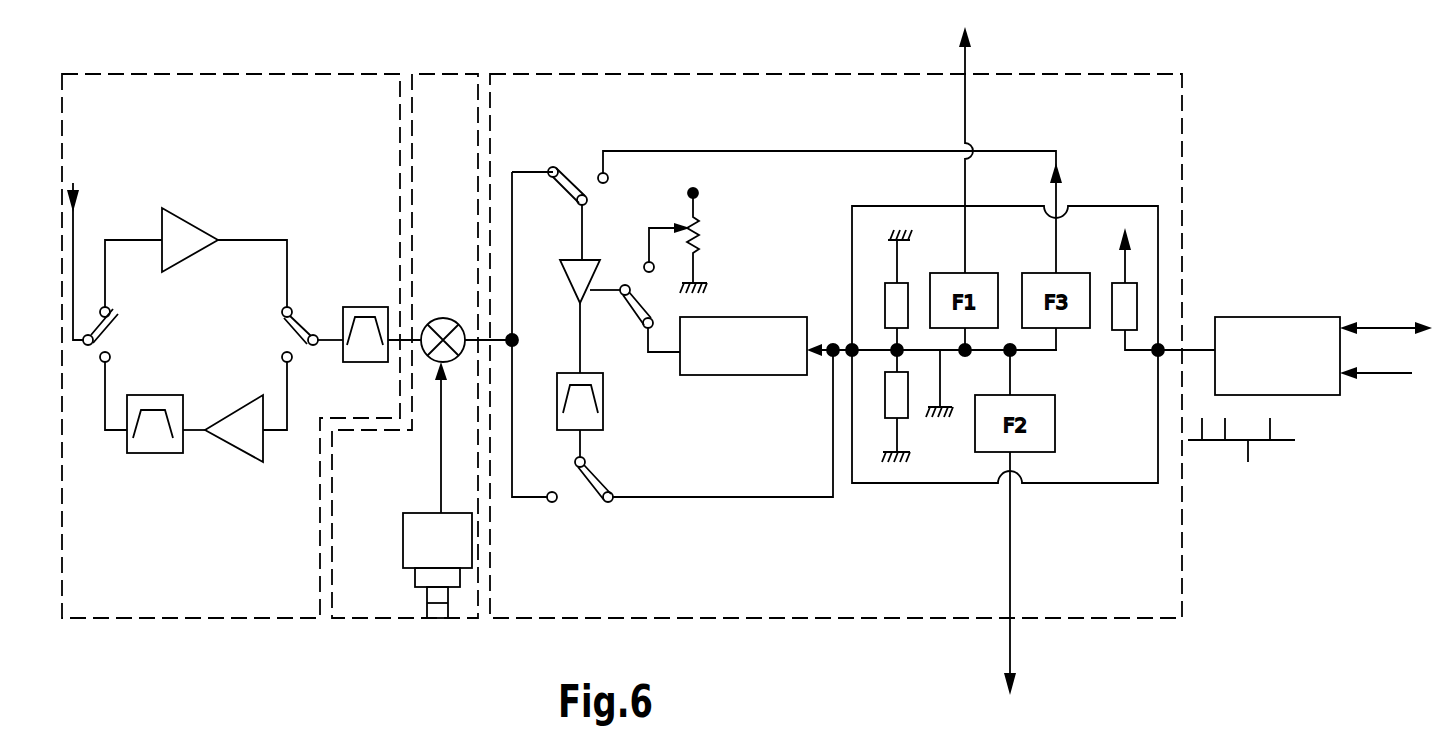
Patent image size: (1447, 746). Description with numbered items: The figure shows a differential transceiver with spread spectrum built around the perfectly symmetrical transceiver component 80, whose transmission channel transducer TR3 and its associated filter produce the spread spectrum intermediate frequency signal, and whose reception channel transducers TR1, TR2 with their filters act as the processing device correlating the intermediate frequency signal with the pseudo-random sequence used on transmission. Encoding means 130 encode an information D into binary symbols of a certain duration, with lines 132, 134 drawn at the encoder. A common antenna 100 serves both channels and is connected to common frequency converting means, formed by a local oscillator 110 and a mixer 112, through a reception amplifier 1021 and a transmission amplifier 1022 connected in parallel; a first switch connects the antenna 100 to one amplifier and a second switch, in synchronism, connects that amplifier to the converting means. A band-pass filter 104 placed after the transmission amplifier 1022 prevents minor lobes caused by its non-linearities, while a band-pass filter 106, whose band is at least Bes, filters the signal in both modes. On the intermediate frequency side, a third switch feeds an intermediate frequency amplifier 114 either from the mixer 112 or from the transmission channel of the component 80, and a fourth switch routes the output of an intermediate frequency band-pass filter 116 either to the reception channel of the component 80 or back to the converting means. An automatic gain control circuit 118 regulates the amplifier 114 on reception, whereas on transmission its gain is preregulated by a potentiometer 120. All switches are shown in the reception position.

The transceiver component 80 is at (1110, 200).
The common antenna 100 is at (73, 257).
The reception amplifier 1021 is at (203, 227).
The transmission amplifier 1022 is at (230, 447).
The band-pass filter 104 is at (143, 453).
The band-pass filter 106 is at (362, 307).
The local oscillator 110 is at (403, 530).
The mixer 112 is at (435, 318).
The intermediate frequency amplifier 114 is at (627, 233).
The intermediate frequency band-pass filter 116 is at (597, 418).
The automatic gain control circuit 118 is at (742, 375).
The potentiometer 120 is at (713, 235).
The reception channel transducer TR1 is at (880, 305).
The reception channel transducer TR2 is at (900, 412).
The transmission channel transducer TR3 is at (1117, 320).
The encoding means 130 is at (1290, 310).
The bidirectional data line 132 is at (1385, 328).
The input line 134 is at (1382, 378).